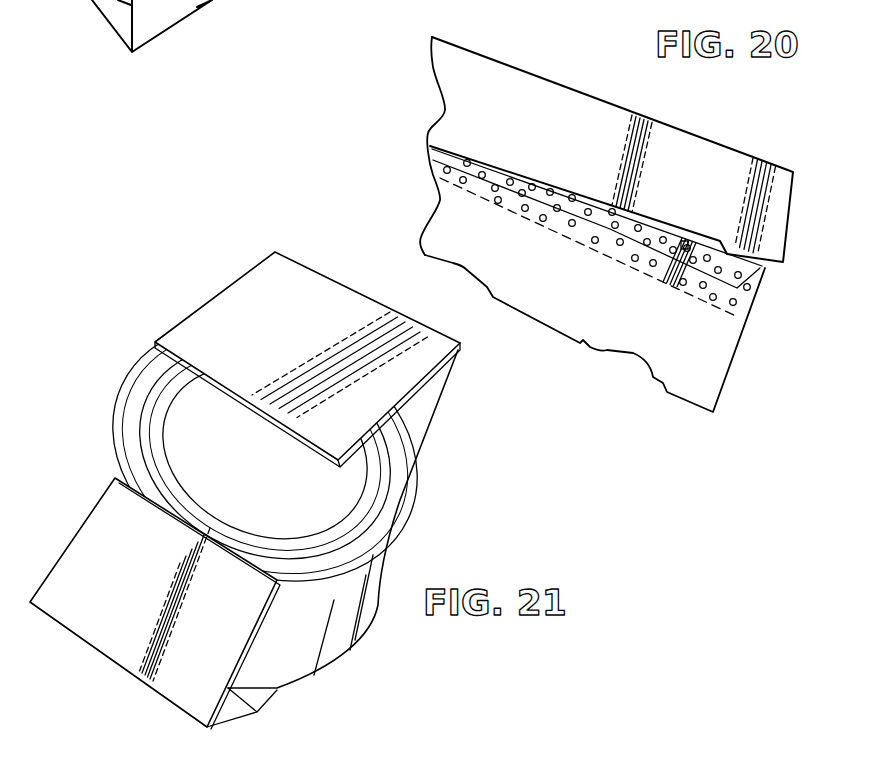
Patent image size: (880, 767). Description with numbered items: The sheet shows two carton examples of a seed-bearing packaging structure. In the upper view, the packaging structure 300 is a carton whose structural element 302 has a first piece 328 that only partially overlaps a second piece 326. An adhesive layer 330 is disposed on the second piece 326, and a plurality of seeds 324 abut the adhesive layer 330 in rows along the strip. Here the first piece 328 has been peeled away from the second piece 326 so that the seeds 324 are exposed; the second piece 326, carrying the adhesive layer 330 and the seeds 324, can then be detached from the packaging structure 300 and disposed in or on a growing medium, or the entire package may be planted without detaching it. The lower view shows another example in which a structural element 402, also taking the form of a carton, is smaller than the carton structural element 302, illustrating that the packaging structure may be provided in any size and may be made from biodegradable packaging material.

In FIG. 20, the packaging structure 300 is at (561, 214).
In FIG. 20, the first piece 328 is at (472, 135).
In FIG. 20, the structural element 302 is at (430, 128).
In FIG. 20, the second piece 326 is at (545, 235).
In FIG. 20, the adhesive layer 330 is at (472, 185).
In FIG. 20, the seed 324 is at (498, 201).
In FIG. 21, the structural element 402 is at (423, 382).